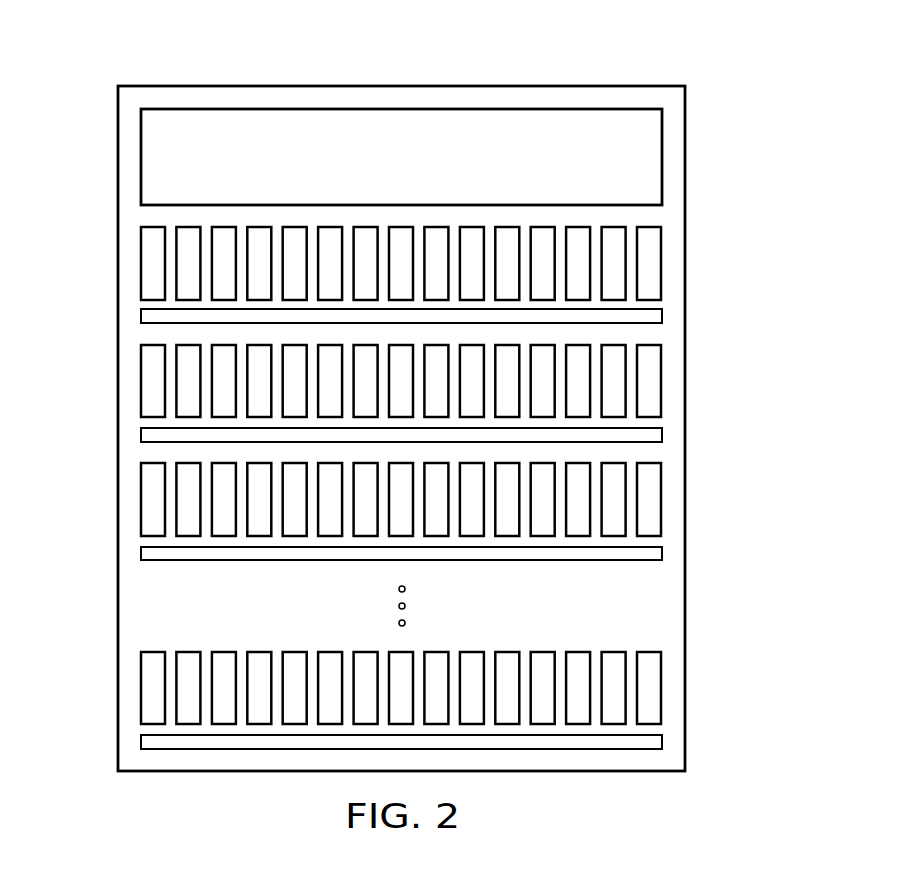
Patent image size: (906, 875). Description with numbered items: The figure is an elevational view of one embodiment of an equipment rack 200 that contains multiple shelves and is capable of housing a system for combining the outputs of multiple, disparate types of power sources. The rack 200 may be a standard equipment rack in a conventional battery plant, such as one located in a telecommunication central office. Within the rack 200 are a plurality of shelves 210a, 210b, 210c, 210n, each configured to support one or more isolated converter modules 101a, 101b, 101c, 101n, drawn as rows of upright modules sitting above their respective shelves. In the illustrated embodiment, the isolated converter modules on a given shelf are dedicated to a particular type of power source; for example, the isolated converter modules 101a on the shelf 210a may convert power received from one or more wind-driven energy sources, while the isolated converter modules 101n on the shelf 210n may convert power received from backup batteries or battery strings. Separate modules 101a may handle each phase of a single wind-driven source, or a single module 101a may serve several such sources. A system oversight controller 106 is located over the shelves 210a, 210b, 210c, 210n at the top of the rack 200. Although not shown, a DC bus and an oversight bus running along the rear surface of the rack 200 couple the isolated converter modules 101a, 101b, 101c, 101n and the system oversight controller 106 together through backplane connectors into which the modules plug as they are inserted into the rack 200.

The equipment rack 200 is at (241, 86).
The system oversight controller 106 is at (424, 190).
The isolated converter modules 101a is at (106, 231).
The isolated converter modules 101b is at (106, 349).
The isolated converter modules 101c is at (106, 467).
The isolated converter modules 101n is at (106, 656).
The shelf 210a is at (662, 318).
The shelf 210b is at (662, 436).
The shelf 210c is at (662, 553).
The shelf 210n is at (662, 742).